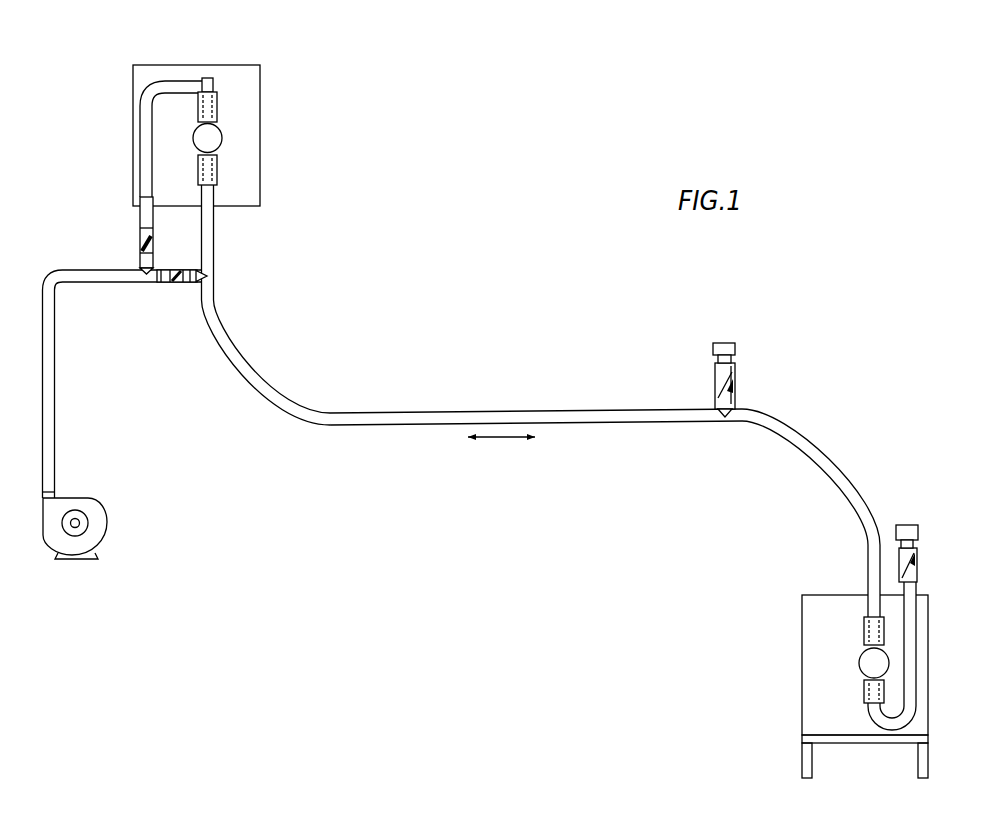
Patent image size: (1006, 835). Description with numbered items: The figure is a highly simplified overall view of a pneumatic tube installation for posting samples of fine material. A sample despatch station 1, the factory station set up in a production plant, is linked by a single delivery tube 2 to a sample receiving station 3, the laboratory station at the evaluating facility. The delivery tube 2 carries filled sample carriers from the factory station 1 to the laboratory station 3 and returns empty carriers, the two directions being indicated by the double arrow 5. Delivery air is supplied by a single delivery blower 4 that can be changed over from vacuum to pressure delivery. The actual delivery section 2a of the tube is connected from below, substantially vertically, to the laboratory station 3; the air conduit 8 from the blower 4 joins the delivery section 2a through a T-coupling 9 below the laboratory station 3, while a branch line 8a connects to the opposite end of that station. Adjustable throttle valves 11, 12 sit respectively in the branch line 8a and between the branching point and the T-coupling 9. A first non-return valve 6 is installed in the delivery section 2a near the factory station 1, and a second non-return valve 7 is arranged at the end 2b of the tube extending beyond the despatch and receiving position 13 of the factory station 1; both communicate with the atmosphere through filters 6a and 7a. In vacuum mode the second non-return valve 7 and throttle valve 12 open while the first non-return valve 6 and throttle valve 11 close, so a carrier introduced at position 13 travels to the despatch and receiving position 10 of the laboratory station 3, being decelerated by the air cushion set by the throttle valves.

The sample despatch station 1 is at (801, 612).
The delivery tube 2 is at (461, 409).
The delivery section 2a is at (300, 405).
The end of the delivery tube 2b is at (908, 648).
The sample receiving station 3 is at (132, 117).
The delivery blower 4 is at (103, 527).
The double arrow 5 is at (497, 440).
The first non-return valve 6 is at (735, 392).
The filter 6a is at (735, 348).
The second non-return valve 7 is at (918, 573).
The filter 7a is at (916, 540).
The air conduit 8 is at (50, 428).
The branch line 8a is at (148, 168).
The T-coupling 9 is at (214, 282).
The despatch and receiving position 10 is at (225, 137).
The throttle valve 11 is at (142, 239).
The throttle valve 12 is at (184, 283).
The despatch and receiving position 13 is at (850, 667).